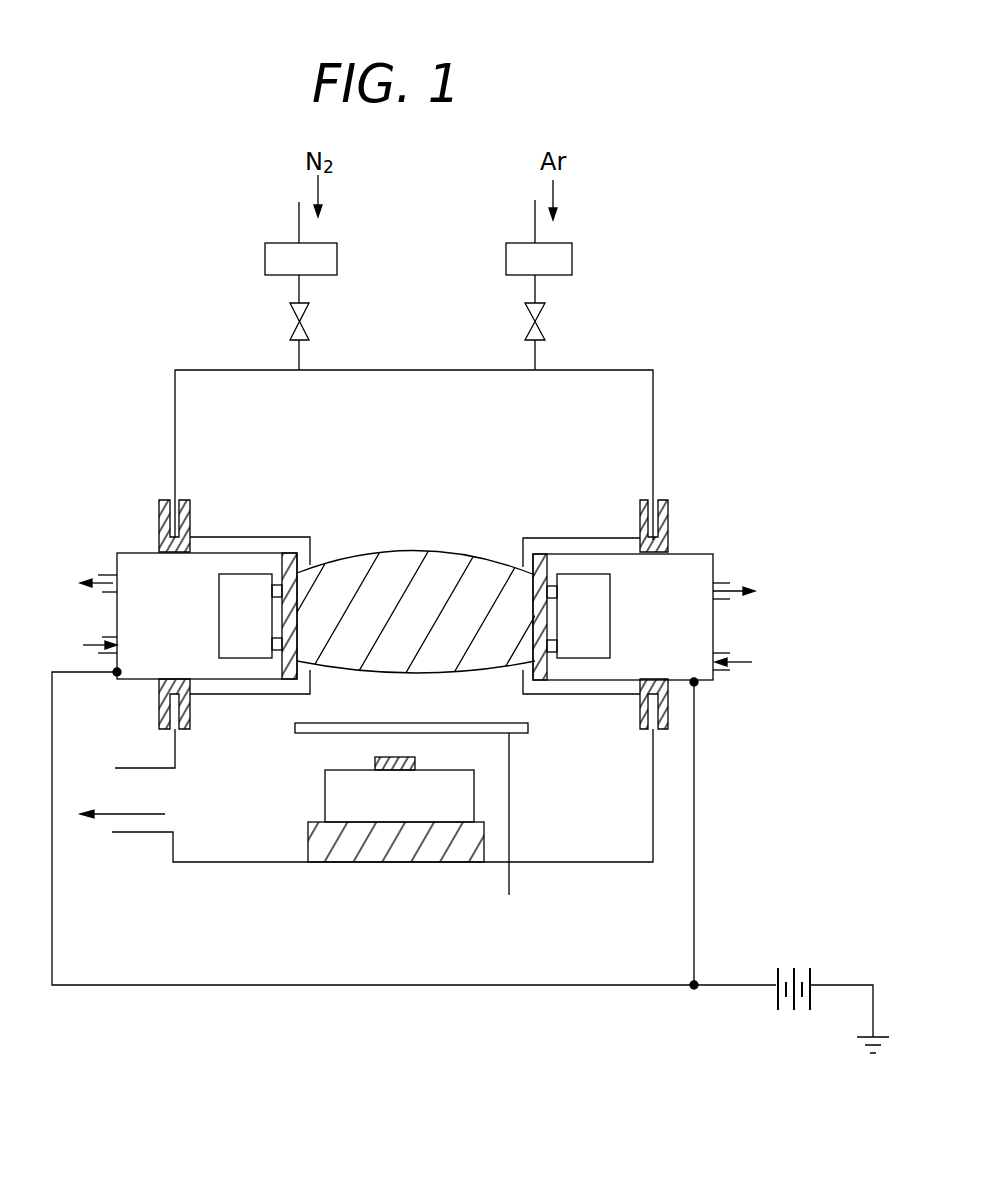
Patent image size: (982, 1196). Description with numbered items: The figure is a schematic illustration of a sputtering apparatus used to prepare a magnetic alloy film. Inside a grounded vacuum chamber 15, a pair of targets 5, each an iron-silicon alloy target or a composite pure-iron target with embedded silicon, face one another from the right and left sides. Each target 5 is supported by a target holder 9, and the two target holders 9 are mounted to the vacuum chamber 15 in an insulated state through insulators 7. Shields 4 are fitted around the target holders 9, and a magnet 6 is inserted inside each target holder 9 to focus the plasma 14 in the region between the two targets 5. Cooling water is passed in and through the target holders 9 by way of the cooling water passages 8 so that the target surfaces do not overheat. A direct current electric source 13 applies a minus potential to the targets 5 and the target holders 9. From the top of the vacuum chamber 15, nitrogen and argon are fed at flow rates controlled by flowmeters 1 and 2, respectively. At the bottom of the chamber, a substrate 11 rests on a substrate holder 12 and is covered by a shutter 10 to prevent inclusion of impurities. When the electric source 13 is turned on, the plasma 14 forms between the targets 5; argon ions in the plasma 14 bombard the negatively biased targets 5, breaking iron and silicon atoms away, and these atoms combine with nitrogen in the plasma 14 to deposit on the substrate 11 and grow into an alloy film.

The flowmeter 1 is at (275, 243).
The flowmeter 2 is at (516, 243).
The shield 4 is at (217, 537).
The target 5 is at (290, 550).
The magnet 6 is at (255, 583).
The insulator 7 is at (163, 500).
The cooling water pipe 8 is at (88, 577).
The target holder 9 is at (137, 552).
The shutter 10 is at (528, 730).
The substrate 11 is at (415, 763).
The substrate holder 12 is at (453, 808).
The direct current electric source 13 is at (798, 962).
The plasma 14 is at (413, 553).
The vacuum chamber 15 is at (188, 367).